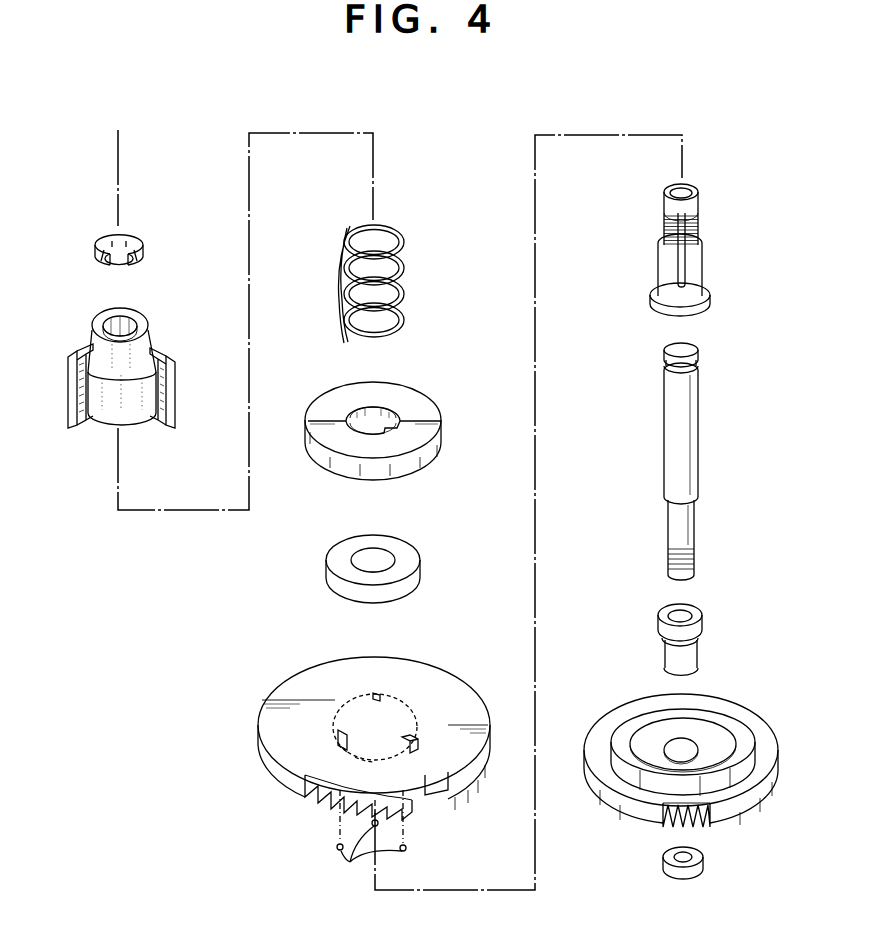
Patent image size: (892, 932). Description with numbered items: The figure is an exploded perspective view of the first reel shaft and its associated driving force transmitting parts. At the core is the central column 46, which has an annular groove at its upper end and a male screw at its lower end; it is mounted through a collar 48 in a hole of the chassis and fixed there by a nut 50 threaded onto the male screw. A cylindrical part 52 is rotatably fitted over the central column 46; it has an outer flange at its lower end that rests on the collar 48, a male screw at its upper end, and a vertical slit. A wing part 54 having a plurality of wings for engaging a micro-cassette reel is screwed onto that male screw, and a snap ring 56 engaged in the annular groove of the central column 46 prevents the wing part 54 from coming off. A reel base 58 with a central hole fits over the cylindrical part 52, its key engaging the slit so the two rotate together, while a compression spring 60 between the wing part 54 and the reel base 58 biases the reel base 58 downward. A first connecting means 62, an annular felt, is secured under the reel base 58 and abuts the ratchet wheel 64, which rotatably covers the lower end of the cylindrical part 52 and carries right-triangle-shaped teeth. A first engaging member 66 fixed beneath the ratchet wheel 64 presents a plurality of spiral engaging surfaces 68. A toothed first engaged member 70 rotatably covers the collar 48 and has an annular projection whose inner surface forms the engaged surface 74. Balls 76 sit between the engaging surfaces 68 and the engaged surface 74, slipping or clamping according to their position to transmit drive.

The central column 46 is at (690, 437).
The collar 48 is at (700, 612).
The nut 50 is at (703, 858).
The cylindrical part 52 is at (700, 258).
The wing part 54 is at (166, 375).
The snap ring 56 is at (141, 246).
The reel base 58 is at (427, 406).
The compression spring 60 is at (405, 270).
The first connecting means 62 is at (419, 557).
The ratchet wheel 64 is at (377, 736).
The first engaging member 66 is at (422, 738).
The engaging surfaces 68 is at (338, 736).
The first engaged member 70 is at (688, 756).
The engaged surface 74 is at (712, 722).
The balls 76 is at (365, 842).